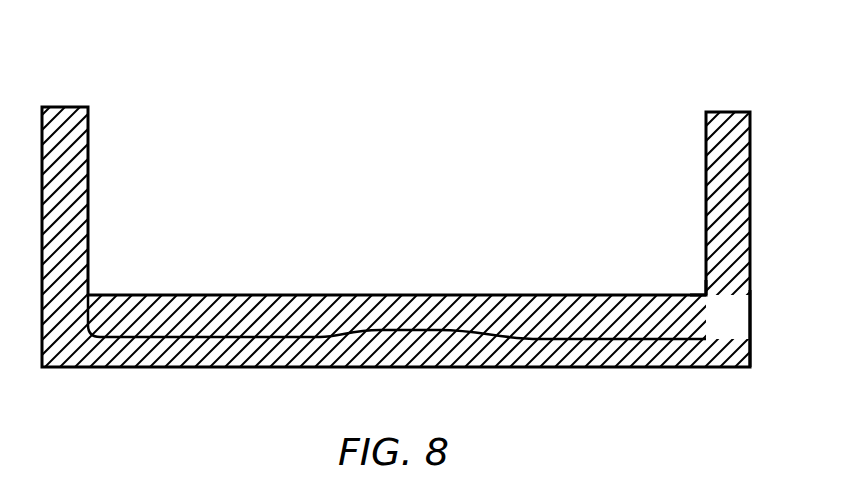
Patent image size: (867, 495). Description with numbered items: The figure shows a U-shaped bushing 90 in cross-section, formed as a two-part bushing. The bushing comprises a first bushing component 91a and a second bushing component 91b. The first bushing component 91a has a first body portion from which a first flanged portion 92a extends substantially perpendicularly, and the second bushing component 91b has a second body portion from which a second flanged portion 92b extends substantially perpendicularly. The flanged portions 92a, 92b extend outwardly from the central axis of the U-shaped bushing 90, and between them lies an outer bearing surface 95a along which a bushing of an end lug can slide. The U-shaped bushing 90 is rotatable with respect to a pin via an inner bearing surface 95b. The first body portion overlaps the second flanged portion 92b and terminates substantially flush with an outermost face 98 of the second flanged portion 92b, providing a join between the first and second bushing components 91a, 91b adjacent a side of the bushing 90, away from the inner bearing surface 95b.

The U-shaped bushing 90 is at (104, 80).
The first bushing component 91a is at (65, 190).
The second bushing component 91b is at (712, 198).
The first flanged portion 92a is at (88, 248).
The second flanged portion 92b is at (706, 262).
The outer bearing surface 95a is at (395, 295).
The inner bearing surface 95b is at (600, 368).
The outermost face 98 is at (751, 230).